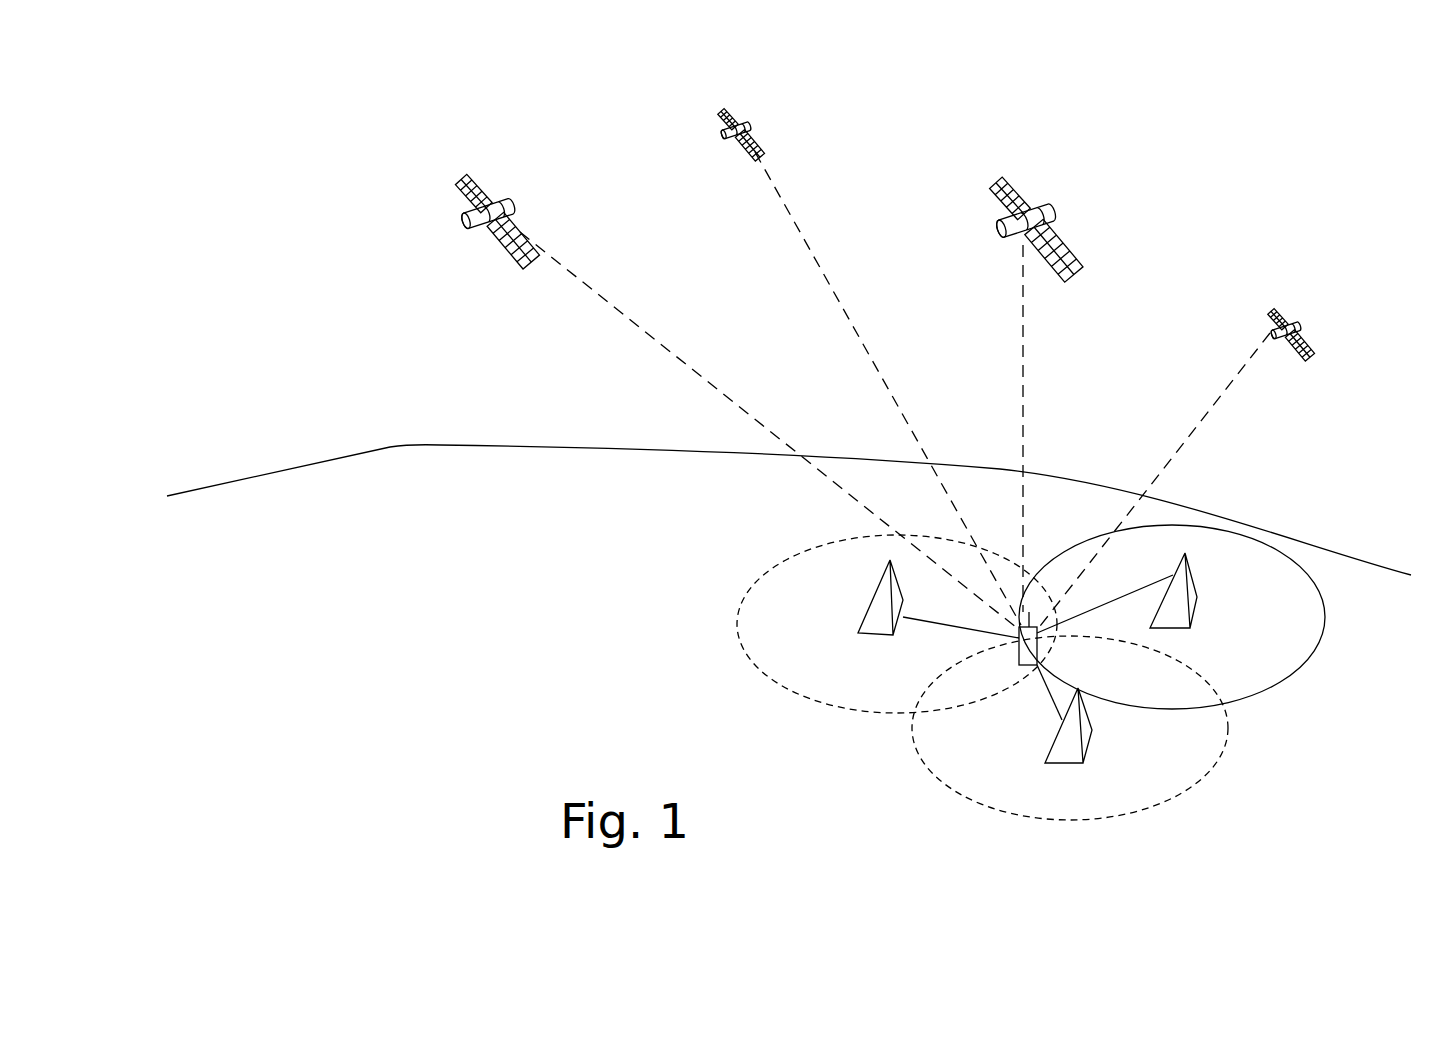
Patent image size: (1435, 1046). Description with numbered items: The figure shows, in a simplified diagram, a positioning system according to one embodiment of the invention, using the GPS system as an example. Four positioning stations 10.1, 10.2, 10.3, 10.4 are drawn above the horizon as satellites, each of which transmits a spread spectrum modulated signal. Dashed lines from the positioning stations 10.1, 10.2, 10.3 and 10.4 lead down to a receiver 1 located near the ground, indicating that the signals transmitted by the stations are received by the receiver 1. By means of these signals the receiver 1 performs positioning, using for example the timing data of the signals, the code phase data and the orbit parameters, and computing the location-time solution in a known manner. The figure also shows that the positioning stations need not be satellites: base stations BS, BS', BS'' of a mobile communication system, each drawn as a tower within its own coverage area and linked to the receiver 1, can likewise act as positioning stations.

The positioning station 10.1 is at (717, 383).
The positioning station 10.2 is at (863, 344).
The positioning station 10.3 is at (1036, 370).
The positioning station 10.4 is at (1192, 441).
The receiver 1 is at (1038, 642).
The base station BS is at (1156, 605).
The base station BS' is at (923, 626).
The base station BS'' is at (1066, 763).